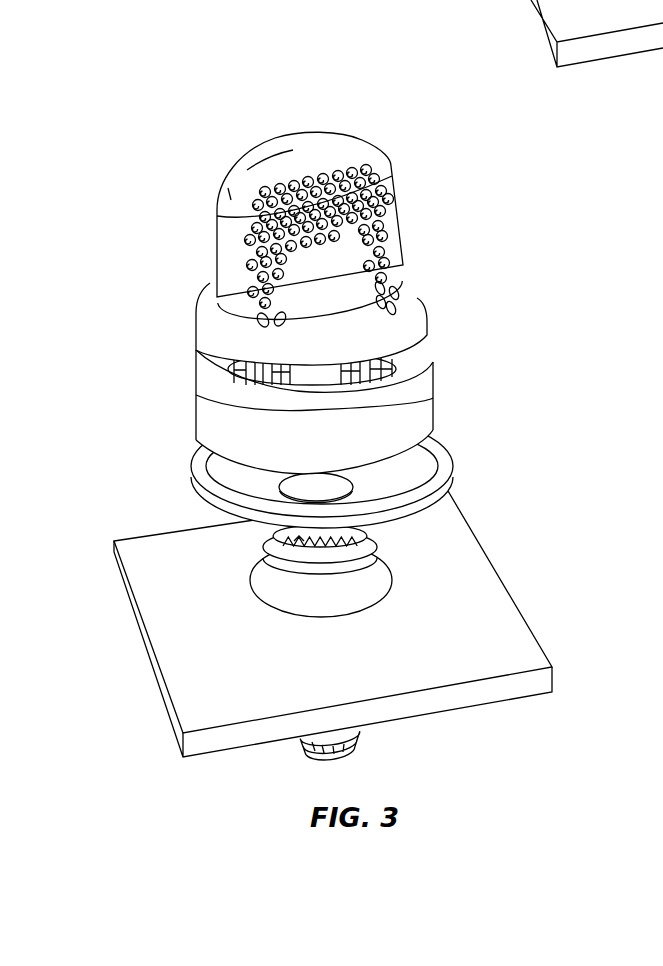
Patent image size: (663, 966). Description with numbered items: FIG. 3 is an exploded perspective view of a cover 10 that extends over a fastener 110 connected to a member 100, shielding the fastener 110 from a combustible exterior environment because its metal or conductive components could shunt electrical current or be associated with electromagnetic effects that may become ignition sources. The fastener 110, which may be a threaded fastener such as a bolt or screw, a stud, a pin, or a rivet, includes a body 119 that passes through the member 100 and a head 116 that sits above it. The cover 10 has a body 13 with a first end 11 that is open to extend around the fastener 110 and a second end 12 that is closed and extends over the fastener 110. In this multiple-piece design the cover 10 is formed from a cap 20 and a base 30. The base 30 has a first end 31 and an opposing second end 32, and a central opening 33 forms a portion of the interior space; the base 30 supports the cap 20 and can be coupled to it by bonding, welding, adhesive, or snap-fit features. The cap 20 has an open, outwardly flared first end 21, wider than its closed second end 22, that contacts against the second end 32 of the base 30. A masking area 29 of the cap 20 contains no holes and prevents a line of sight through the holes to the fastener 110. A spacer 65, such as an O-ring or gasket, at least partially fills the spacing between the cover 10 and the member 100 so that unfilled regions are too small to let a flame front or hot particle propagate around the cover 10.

The cover 10 is at (213, 100).
The first end 11 is at (437, 435).
The second end 12 is at (328, 142).
The body 13 is at (400, 221).
The cap 20 is at (217, 243).
The first end 21 is at (230, 350).
The second end 22 is at (282, 147).
The masking area 29 is at (332, 293).
The base 30 is at (208, 408).
The first end 31 is at (233, 473).
The second end 32 is at (413, 357).
The central opening 33 is at (237, 372).
The spacer 65 is at (440, 463).
The member 100 is at (470, 607).
The fastener 110 is at (297, 543).
The head 116 is at (360, 535).
The body 119 is at (353, 740).